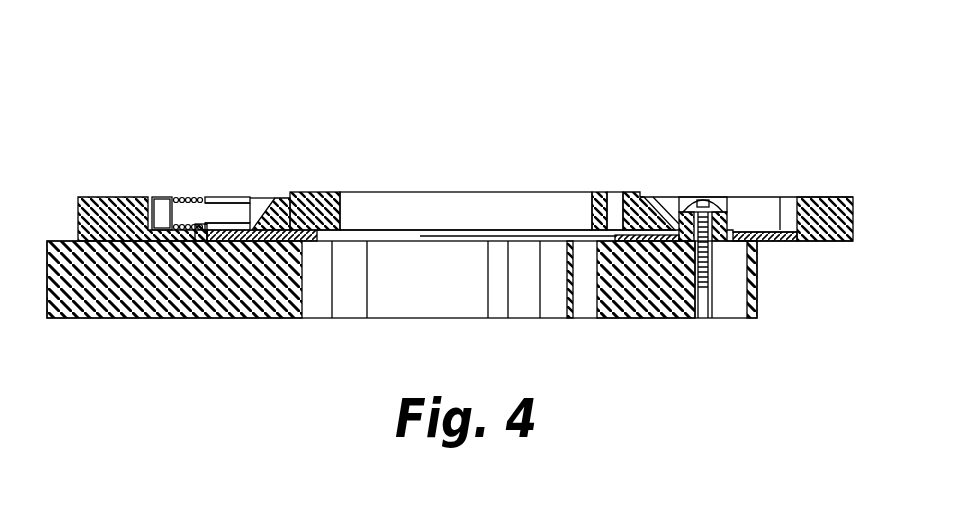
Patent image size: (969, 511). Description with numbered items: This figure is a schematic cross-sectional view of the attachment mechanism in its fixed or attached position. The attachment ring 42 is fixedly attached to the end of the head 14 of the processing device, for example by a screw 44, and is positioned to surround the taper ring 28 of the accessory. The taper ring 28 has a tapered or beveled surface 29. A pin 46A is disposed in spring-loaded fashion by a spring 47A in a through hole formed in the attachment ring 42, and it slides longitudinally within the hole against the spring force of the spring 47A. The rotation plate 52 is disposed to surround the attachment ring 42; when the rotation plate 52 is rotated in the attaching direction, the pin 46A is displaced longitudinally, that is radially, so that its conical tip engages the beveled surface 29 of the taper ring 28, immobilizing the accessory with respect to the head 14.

The head 14 is at (148, 320).
The taper ring 28 is at (322, 193).
The beveled surface 29 is at (265, 197).
The attachment ring 42 is at (212, 197).
The screw 44 is at (718, 198).
The pin 46A is at (231, 213).
The spring 47A is at (189, 197).
The rotation plate 52 is at (113, 197).